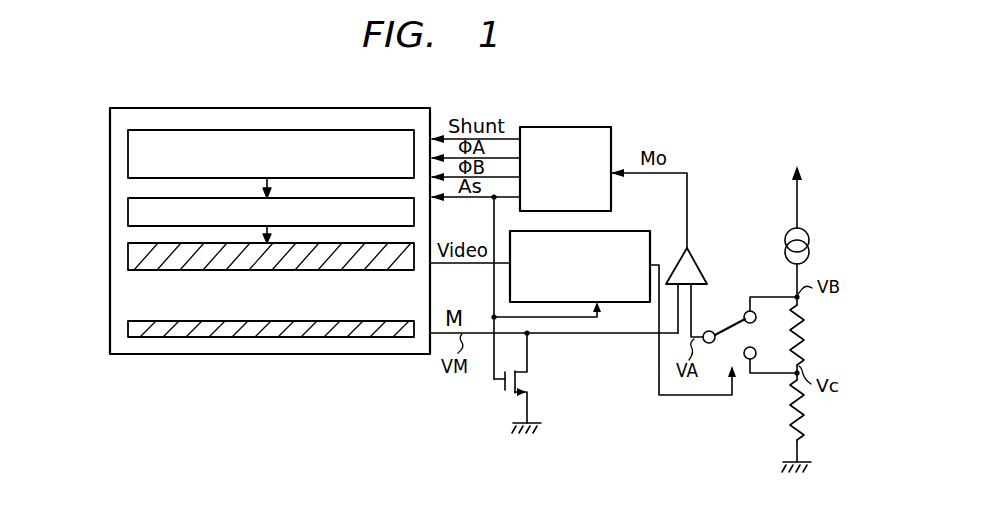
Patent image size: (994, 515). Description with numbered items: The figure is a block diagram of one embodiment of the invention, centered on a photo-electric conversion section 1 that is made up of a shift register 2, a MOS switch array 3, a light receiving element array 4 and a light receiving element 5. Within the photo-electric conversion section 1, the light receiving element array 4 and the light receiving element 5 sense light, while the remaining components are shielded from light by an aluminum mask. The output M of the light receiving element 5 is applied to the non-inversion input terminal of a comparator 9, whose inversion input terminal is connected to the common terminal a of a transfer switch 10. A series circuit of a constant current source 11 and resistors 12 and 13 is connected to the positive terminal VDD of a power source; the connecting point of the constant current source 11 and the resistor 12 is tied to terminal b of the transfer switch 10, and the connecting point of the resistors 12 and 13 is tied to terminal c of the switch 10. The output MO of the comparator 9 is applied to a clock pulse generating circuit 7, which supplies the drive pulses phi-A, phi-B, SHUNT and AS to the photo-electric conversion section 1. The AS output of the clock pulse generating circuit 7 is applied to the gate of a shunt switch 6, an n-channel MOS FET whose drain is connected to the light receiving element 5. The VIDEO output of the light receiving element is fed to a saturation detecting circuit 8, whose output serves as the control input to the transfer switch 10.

The photo-electric conversion section 1 is at (183, 108).
The shift register 2 is at (128, 153).
The MOS switch array 3 is at (128, 209).
The light receiving element array 4 is at (128, 258).
The light receiving element 5 is at (128, 326).
The shunt switch 6 is at (503, 397).
The clock pulse generating circuit 7 is at (583, 127).
The saturation detecting circuit 8 is at (641, 231).
The comparator 9 is at (699, 264).
The transfer switch 10 is at (712, 355).
The constant current source 11 is at (809, 245).
The resistor 12 is at (802, 330).
The resistor 13 is at (802, 424).